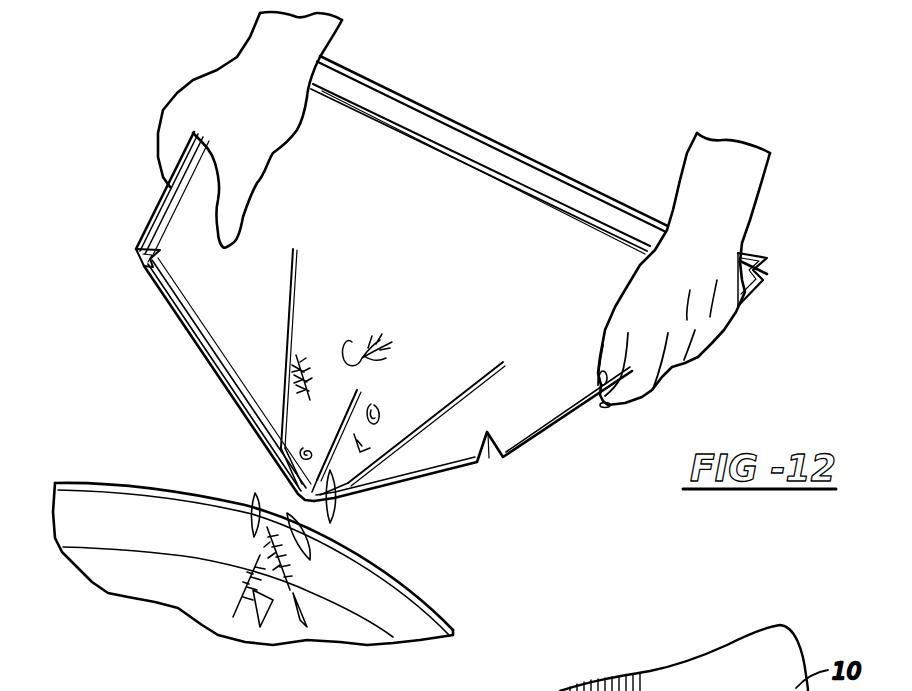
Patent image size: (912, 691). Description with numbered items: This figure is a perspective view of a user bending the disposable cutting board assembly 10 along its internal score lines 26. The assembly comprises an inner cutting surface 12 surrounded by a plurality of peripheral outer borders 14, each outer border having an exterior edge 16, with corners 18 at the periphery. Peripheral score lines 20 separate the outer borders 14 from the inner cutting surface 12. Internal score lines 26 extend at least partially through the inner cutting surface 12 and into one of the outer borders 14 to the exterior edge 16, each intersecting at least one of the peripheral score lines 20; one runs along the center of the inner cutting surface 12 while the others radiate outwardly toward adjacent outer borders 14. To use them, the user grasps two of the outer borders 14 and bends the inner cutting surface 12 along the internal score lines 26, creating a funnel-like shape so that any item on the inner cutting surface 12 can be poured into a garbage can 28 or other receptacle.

The cutting board assembly 10 is at (666, 120).
The inner cutting surface 12 is at (446, 238).
The outer borders 14 is at (167, 203).
The exterior edge 16 is at (614, 194).
The corners 18 is at (135, 256).
The peripheral score lines 20 is at (428, 134).
The internal score line 26 is at (300, 334).
The garbage can 28 is at (397, 600).